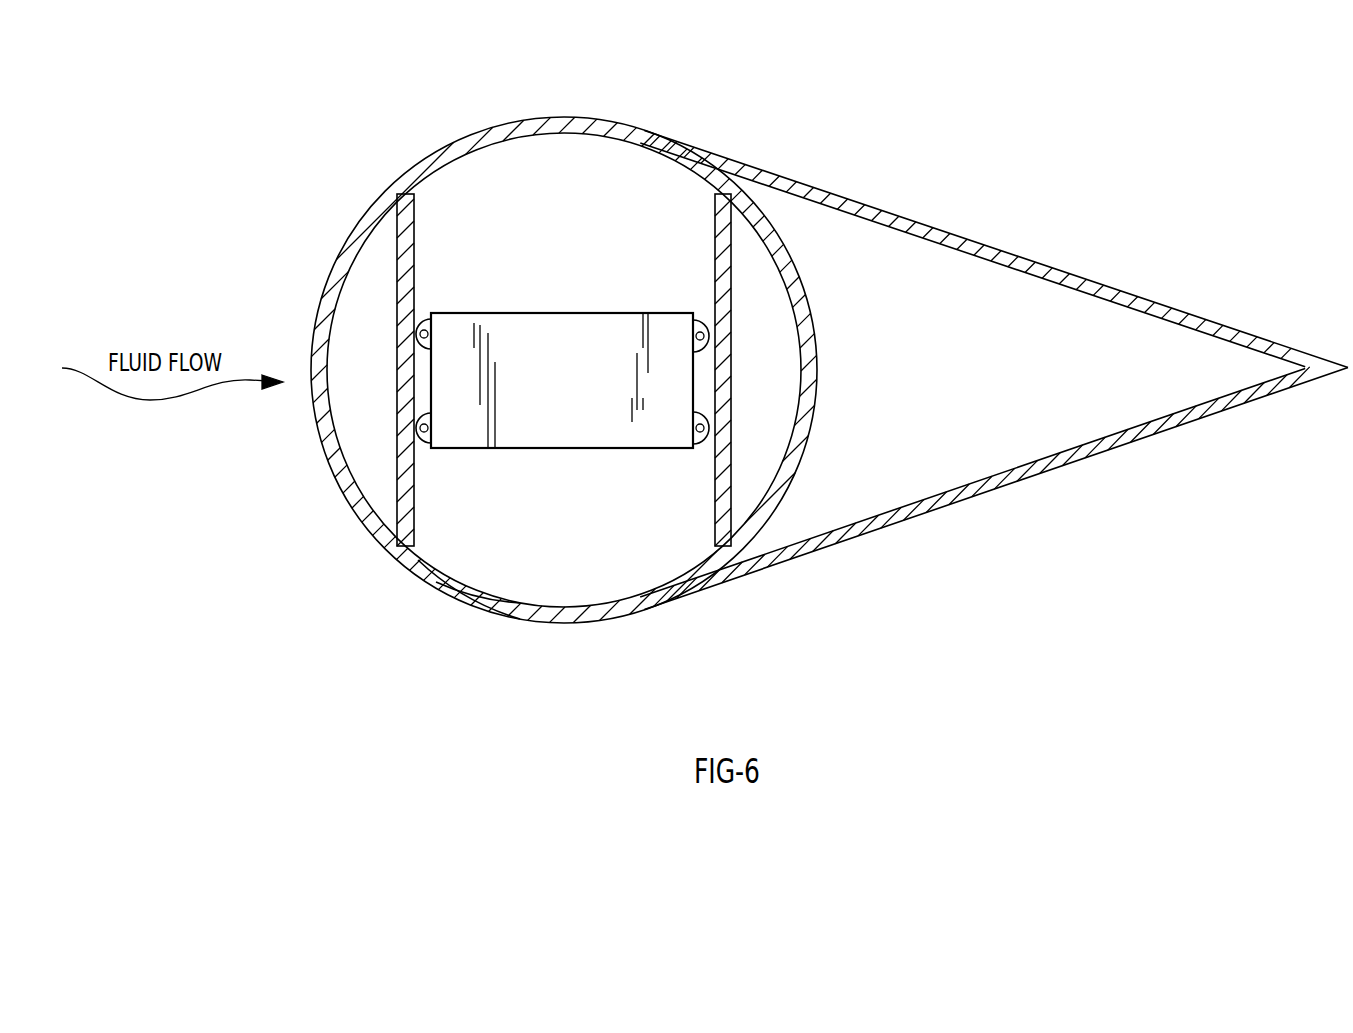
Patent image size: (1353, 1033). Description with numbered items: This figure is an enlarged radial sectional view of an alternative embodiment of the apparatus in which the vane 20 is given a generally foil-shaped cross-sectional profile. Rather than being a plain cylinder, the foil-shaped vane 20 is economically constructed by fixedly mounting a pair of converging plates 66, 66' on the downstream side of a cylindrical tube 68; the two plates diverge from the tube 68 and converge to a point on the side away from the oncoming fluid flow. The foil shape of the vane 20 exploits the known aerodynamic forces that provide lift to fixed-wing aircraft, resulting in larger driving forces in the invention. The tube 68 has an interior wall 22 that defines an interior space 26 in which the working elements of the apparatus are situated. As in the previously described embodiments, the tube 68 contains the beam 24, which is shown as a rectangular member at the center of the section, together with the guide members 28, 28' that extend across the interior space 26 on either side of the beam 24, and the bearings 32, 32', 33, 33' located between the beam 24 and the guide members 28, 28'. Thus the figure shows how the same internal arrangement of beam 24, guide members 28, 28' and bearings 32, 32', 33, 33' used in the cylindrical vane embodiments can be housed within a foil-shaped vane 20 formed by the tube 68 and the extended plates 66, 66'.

The vane 20 is at (475, 132).
The interior wall 22 is at (450, 575).
The beam 24 is at (545, 396).
The interior space 26 is at (578, 228).
The guide member 28 is at (681, 300).
The guide member 28' is at (363, 320).
The bearing 32 is at (344, 280).
The bearing 32' is at (329, 451).
The bearing 33 is at (736, 328).
The bearing 33' is at (735, 436).
The converging plate 66 is at (994, 249).
The converging plate 66' is at (994, 488).
The cylindrical tube 68 is at (480, 607).